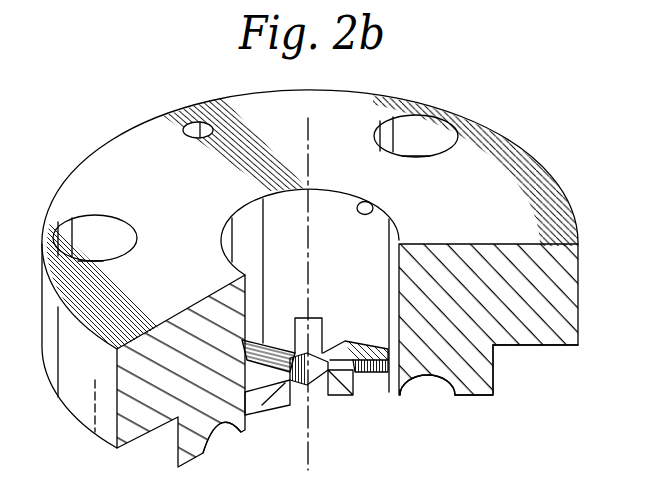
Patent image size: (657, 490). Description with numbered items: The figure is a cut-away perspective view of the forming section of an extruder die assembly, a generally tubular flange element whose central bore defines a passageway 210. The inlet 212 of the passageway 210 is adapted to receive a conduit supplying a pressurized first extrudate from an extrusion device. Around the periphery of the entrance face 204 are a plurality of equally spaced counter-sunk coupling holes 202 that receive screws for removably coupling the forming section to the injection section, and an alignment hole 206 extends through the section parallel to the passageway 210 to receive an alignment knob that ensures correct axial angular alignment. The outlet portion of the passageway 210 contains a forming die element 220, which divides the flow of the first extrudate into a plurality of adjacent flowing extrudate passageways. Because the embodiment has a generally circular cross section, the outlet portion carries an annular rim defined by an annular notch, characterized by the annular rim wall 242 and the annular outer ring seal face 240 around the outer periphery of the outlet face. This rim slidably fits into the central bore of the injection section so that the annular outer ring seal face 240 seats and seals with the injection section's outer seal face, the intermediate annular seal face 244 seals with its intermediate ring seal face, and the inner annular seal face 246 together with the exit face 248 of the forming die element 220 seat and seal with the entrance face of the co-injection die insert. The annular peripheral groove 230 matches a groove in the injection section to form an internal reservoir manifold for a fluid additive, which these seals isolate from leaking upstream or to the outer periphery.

The counter-sunk coupling holes 202 is at (112, 238).
The entrance face 204 is at (137, 130).
The alignment hole 206 is at (200, 140).
The passageway 210 is at (363, 262).
The inlet 212 is at (373, 210).
The forming die element 220 is at (327, 345).
The annular peripheral groove 230 is at (418, 378).
The annular outer ring seal face 240 is at (556, 345).
The annular rim wall 242 is at (493, 368).
The intermediate annular seal face 244 is at (477, 397).
The inner annular seal face 246 is at (397, 382).
The exit face 248 is at (313, 388).